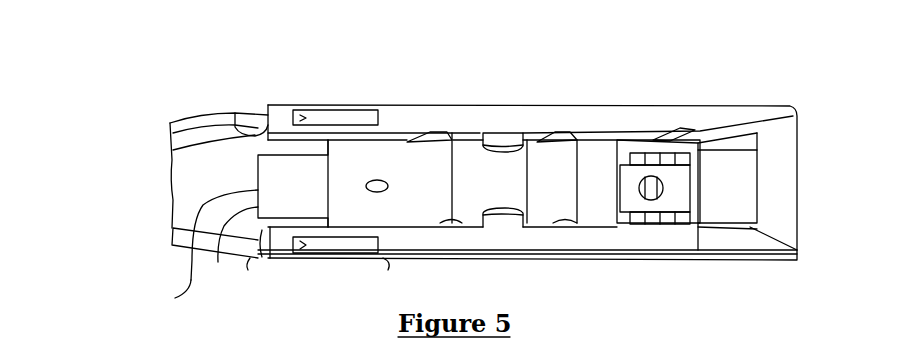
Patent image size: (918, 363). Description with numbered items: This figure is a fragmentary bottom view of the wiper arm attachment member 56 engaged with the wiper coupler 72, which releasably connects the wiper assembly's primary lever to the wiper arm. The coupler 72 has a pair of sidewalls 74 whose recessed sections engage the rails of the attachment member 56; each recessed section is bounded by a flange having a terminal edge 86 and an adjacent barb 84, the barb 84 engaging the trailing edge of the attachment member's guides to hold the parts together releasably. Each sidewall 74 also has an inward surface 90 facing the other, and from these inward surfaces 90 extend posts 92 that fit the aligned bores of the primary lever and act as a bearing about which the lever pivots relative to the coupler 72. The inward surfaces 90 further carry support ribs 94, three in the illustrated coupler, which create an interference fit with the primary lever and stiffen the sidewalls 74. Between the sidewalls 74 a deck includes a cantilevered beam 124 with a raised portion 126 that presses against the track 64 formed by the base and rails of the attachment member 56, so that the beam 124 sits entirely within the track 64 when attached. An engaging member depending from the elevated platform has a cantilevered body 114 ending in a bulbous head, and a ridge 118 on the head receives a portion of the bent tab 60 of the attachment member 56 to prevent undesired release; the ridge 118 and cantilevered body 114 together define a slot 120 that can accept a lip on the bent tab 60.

The attachment member 56 is at (186, 106).
The bent tab 60 is at (628, 227).
The track 64 is at (131, 152).
The wiper coupler 72 is at (553, 80).
The sidewall 74 is at (697, 110).
The barb 84 is at (282, 106).
The terminal edge 86 is at (235, 117).
The inward surface 90 is at (652, 128).
The post 92 is at (500, 138).
The support rib 94 is at (445, 130).
The cantilevered body 114 is at (748, 148).
The ridge 118 is at (660, 226).
The slot 120 is at (680, 226).
The cantilevered beam 124 is at (218, 262).
The raised portion 126 is at (191, 285).